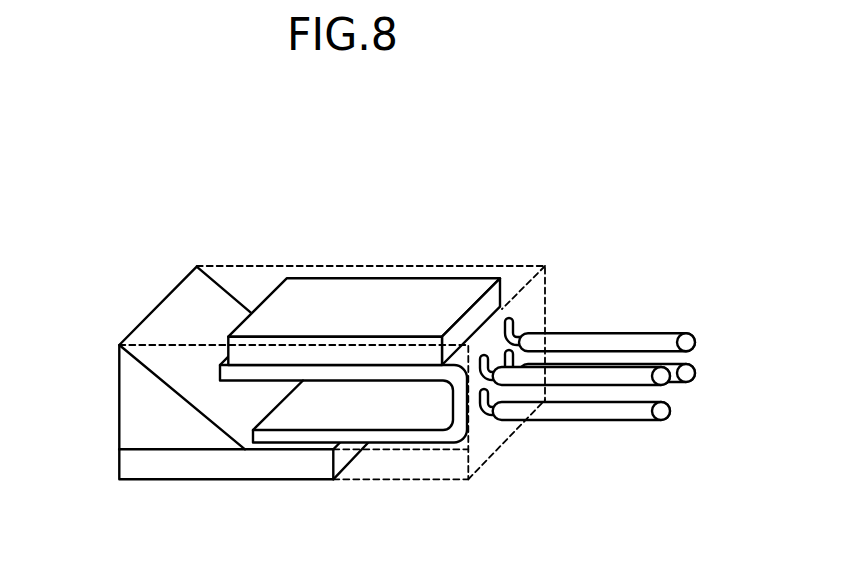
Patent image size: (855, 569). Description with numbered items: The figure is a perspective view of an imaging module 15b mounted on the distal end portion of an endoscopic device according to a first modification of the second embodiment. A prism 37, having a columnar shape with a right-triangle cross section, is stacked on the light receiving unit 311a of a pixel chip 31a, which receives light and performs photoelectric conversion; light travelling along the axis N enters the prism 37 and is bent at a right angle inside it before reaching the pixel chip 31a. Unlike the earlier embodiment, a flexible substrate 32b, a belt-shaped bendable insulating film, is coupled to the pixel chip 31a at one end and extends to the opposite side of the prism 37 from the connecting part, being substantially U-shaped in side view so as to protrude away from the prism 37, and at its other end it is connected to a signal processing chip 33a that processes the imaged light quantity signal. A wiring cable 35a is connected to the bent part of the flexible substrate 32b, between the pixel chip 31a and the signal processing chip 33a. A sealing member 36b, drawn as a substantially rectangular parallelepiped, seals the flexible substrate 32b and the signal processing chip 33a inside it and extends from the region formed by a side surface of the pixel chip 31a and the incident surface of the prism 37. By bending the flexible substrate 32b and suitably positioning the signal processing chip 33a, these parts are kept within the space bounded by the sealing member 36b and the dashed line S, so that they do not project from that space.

The imaging module 15b is at (601, 214).
The pixel chip 31a is at (163, 474).
The light receiving unit 311a is at (170, 443).
The flexible substrate 32b is at (375, 436).
The signal processing chip 33a is at (358, 290).
The wiring cable 35a is at (653, 333).
The sealing member 36b is at (462, 265).
The prism 37 is at (128, 363).
The axis N is at (90, 389).
The dashed line S is at (426, 441).